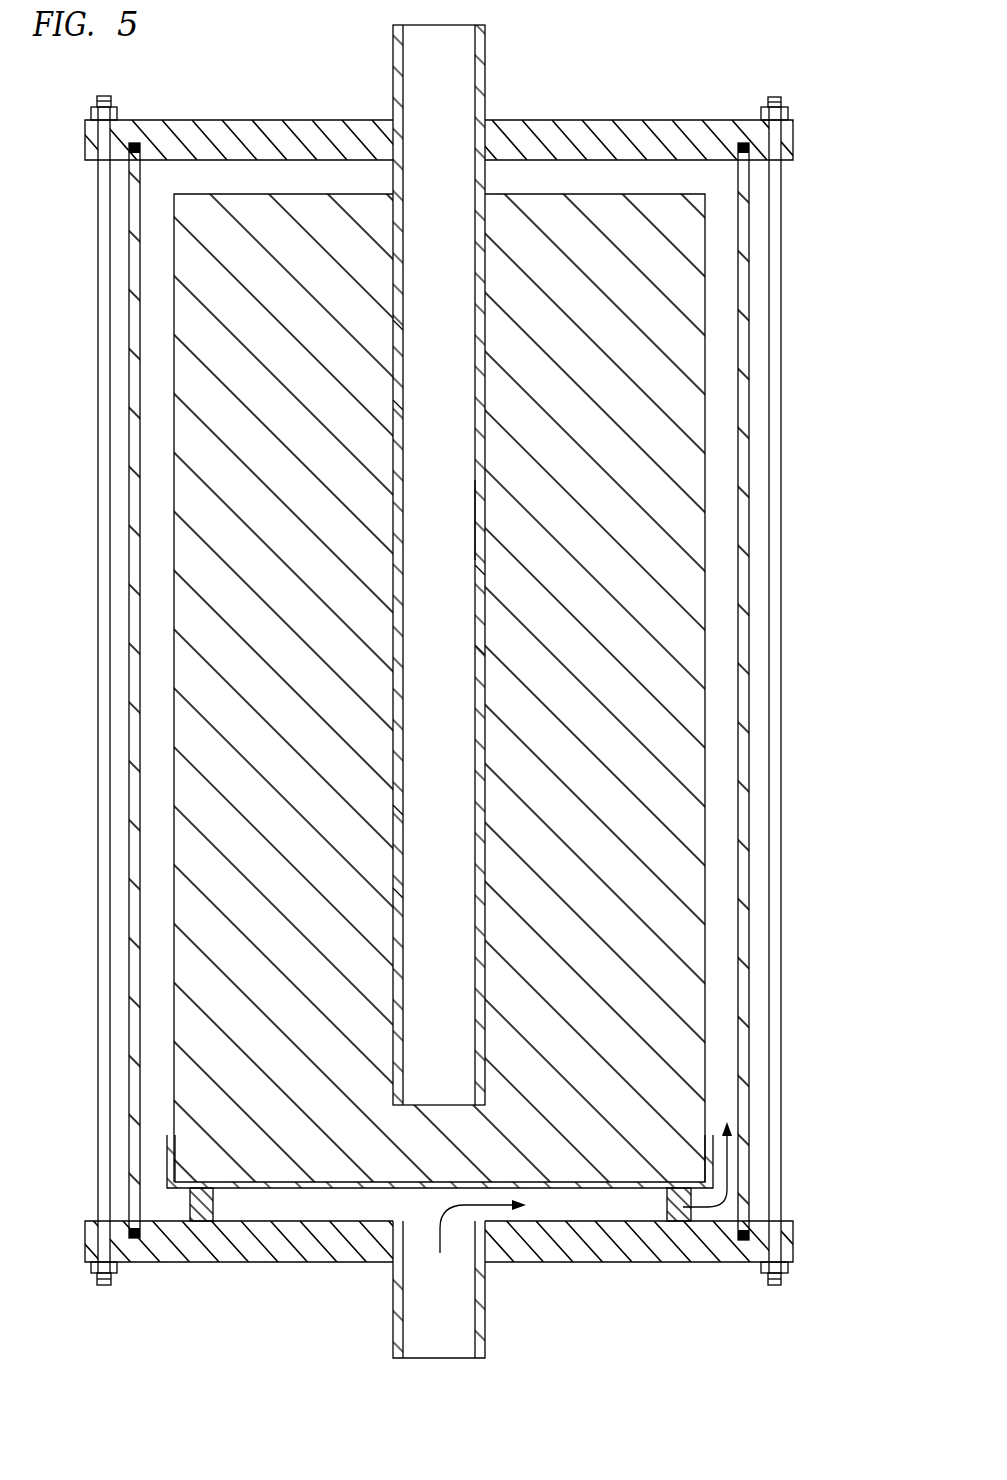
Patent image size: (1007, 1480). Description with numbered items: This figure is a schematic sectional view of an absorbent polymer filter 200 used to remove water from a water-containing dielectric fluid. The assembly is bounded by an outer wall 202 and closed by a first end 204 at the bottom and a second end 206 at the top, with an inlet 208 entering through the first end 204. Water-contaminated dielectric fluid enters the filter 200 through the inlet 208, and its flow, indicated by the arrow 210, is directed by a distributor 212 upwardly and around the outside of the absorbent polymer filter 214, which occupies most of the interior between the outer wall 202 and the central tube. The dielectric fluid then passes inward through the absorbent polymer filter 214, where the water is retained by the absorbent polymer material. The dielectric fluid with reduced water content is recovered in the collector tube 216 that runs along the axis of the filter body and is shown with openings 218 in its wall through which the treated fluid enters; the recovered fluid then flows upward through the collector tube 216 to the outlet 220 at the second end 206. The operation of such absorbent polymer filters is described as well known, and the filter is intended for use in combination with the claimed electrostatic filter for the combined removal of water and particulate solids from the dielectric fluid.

The absorbent polymer filter 200 is at (240, 76).
The outer wall 202 is at (745, 442).
The first end 204 is at (588, 1262).
The second end 206 is at (608, 125).
The inlet 208 is at (480, 1293).
The arrow 210 is at (481, 1202).
The distributor 212 is at (337, 1175).
The absorbent polymer filter 214 is at (263, 757).
The collector tube 216 is at (485, 520).
The perforations 218 is at (394, 322).
The outlet 220 is at (484, 82).